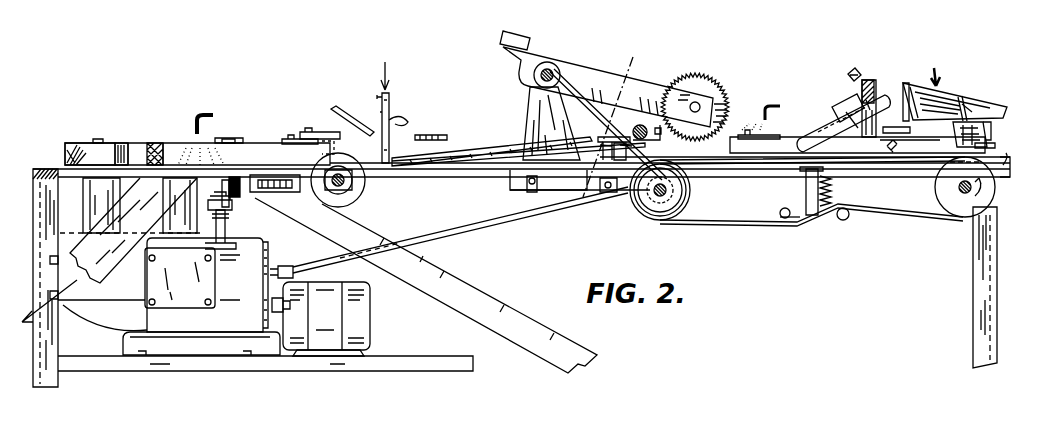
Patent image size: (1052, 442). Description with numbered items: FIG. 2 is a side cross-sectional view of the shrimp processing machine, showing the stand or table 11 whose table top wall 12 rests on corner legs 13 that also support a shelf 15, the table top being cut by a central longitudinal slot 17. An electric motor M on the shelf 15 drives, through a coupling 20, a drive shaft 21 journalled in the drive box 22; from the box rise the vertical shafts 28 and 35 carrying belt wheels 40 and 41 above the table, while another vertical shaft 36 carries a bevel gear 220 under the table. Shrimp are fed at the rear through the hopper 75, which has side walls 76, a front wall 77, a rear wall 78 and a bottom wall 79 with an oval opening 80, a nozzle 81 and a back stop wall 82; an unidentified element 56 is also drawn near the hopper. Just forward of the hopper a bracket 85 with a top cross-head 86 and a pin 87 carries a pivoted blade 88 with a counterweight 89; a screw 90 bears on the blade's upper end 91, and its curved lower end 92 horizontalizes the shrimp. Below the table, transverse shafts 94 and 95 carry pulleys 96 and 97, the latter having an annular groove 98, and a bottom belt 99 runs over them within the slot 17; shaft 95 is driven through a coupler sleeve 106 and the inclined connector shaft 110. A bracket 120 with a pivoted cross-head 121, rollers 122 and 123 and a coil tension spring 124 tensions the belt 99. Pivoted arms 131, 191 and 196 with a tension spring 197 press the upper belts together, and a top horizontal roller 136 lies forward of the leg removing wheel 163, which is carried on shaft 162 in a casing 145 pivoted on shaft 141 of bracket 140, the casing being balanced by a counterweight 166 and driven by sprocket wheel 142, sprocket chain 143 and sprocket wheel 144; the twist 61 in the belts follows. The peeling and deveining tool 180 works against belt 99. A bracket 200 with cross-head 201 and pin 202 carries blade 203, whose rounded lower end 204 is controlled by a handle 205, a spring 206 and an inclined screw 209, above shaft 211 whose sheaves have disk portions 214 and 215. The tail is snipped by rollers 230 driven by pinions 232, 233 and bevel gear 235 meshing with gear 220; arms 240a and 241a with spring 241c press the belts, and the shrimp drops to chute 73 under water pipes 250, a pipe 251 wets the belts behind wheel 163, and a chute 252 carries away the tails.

The stand or table 11 is at (39, 112).
The table top wall 12 is at (1003, 160).
The corner legs 13 is at (42, 198).
The shelf 15 is at (436, 364).
The central longitudinal slot 17 is at (459, 167).
The coupling 20 is at (262, 295).
The drive shaft 21 is at (275, 304).
The drive box or casing 22 is at (236, 322).
The vertical shaft 28 is at (180, 142).
The vertical shaft 35 is at (99, 139).
The vertical shaft 36 is at (203, 246).
The belt wheel 40 is at (76, 143).
The belt wheel 41 is at (160, 142).
The block 56 is at (900, 127).
The twist 61 is at (498, 135).
The chute 73 is at (100, 270).
The hopper 75 is at (927, 69).
The side walls 76 is at (943, 106).
The front wall 77 is at (902, 82).
The rear wall 78 is at (993, 126).
The bottom wall 79 is at (964, 106).
The oval shaped opening 80 is at (973, 117).
The nozzle 81 is at (984, 132).
The back stop wall 82 is at (968, 112).
The bracket 85 is at (872, 70).
The top cross-head 86 is at (868, 106).
The pin 87 is at (848, 112).
The blade 88 is at (828, 128).
The counterweight 89 is at (835, 108).
The screw 90 is at (854, 68).
The upper end of the blade 91 is at (878, 96).
The curved lower end of the blade 92 is at (857, 146).
The transverse horizontal shaft 94 is at (961, 196).
The transverse horizontal shaft 95 is at (669, 215).
The belt wheel or pulley 96 is at (940, 182).
The belt wheel or pulley 97 is at (683, 190).
The central annular groove 98 is at (690, 200).
The bottom belt 99 is at (901, 222).
The coupler sleeve 106 is at (291, 258).
The inclined connector shaft 110 is at (482, 218).
The bracket 120 is at (806, 180).
The cross-head 121 is at (825, 221).
The roller 122 is at (784, 209).
The roller 123 is at (846, 221).
The coil tension spring 124 is at (833, 197).
The arm 131 is at (748, 131).
The top horizontal roller 136 is at (642, 124).
The bracket 140 is at (530, 100).
The horizontal transverse shaft 141 is at (551, 67).
The sprocket wheel 142 is at (575, 86).
The sprocket chain 143 is at (647, 70).
The sprocket wheel 144 is at (620, 149).
The casing 145 is at (609, 62).
The shaft 162 is at (699, 105).
The large wheel 163 is at (697, 80).
The counterweight 166 is at (506, 38).
The peeling and deveining tool 180 is at (546, 191).
The arm 191 is at (606, 136).
The arm 196 is at (420, 134).
The tension spring 197 is at (465, 148).
The bracket 200 is at (388, 65).
The horizontal cross-head 201 is at (379, 96).
The pin 202 is at (367, 117).
The blade 203 is at (408, 119).
The rounded lower end of the blade 204 is at (360, 172).
The handle 205 is at (326, 132).
The spring 206 is at (389, 100).
The inclined screw 209 is at (381, 110).
The transverse horizontal shaft 211 is at (346, 188).
The annular disk portion 214 is at (328, 142).
The inner disk portion 215 is at (343, 192).
The bevel gear 220 is at (226, 216).
The rollers 230 is at (278, 193).
The pinions 232 is at (236, 176).
The pinions 233 is at (234, 205).
The bevel gear 235 is at (194, 181).
The arms 240a is at (298, 139).
The arms 241a is at (228, 138).
The coil tension spring 241c is at (224, 138).
The pipes 250 is at (202, 113).
The pipe 251 is at (771, 110).
The chute 252 is at (473, 318).
The electric motor M is at (368, 306).